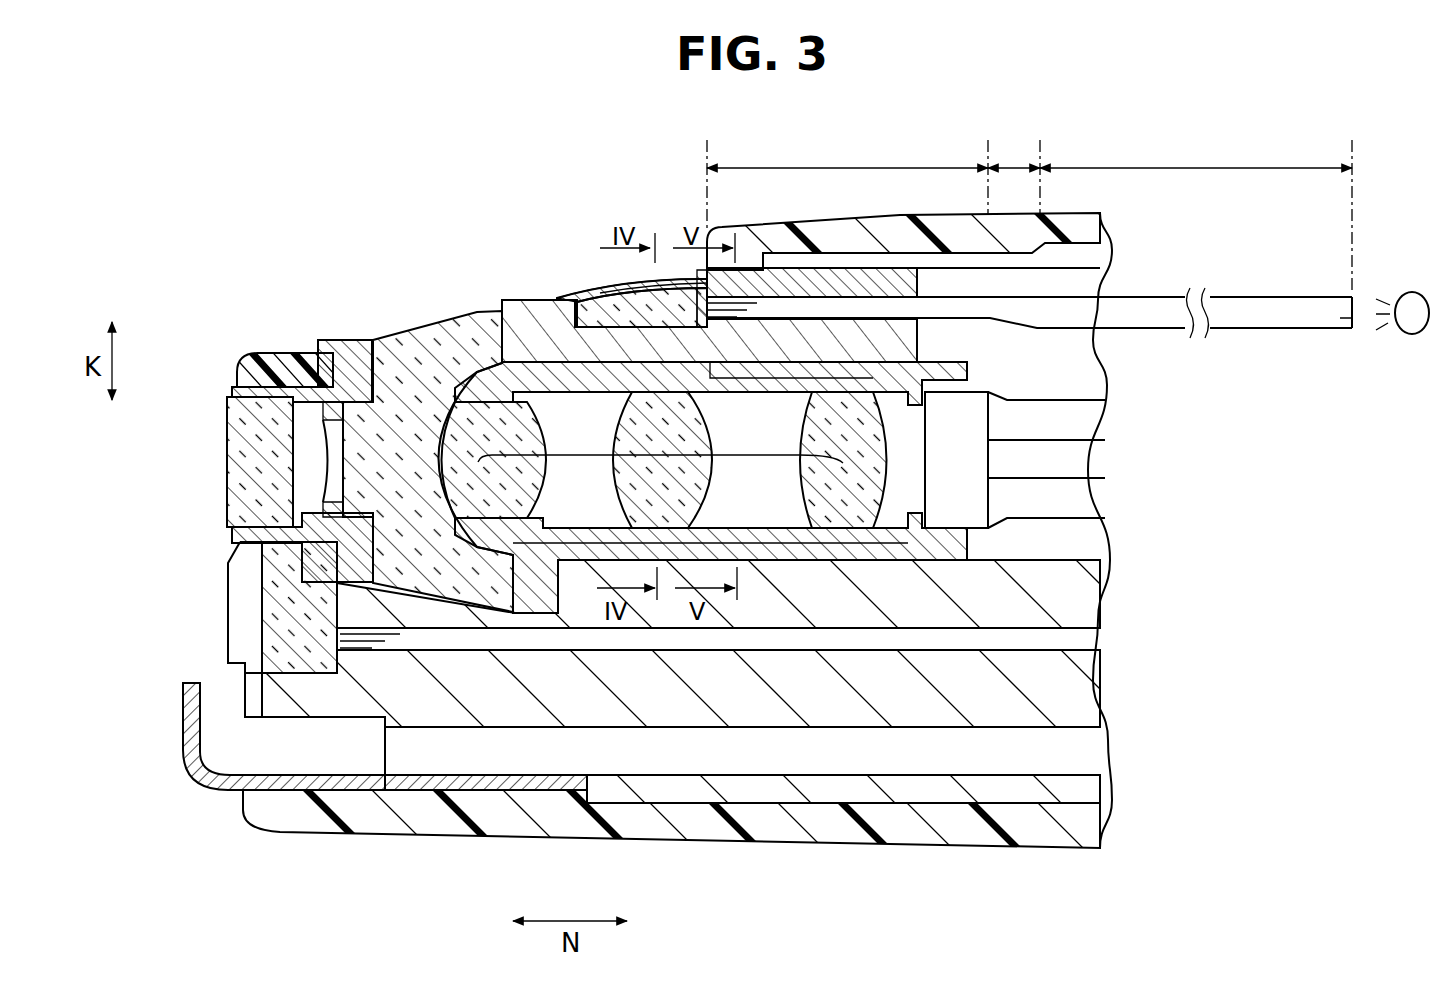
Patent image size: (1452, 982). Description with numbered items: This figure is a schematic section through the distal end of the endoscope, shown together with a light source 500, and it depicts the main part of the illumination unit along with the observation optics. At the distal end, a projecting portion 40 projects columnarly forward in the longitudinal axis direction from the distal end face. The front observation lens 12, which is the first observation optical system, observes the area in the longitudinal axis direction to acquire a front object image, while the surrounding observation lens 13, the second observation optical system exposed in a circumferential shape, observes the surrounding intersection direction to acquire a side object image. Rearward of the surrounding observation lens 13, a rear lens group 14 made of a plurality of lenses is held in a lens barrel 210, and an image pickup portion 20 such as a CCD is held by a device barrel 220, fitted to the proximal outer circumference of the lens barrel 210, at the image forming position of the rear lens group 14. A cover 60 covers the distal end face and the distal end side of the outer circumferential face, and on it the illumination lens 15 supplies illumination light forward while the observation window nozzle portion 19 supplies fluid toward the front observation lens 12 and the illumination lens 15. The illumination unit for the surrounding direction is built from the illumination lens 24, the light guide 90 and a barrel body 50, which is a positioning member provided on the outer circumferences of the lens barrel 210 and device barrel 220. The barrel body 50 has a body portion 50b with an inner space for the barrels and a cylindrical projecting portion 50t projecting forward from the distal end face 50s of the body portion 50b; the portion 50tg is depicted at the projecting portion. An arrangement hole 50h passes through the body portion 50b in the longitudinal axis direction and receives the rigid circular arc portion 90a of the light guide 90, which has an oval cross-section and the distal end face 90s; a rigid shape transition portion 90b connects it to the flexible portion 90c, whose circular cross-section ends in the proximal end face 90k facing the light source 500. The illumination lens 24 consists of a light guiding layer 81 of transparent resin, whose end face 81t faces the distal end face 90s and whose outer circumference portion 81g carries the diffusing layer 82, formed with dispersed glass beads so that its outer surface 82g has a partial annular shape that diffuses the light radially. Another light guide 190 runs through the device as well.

The front observation lens 12 is at (247, 460).
The surrounding observation lens 13 is at (412, 357).
The rear lens group 14 is at (660, 450).
The illumination lens 15 is at (280, 607).
The observation window nozzle portion 19 is at (213, 792).
The image pickup portion 20 is at (965, 458).
The illumination lens 24 is at (523, 230).
The projecting portion 40 is at (183, 856).
The barrel body 50 is at (783, 333).
The body portion 50b is at (862, 340).
The arrangement hole 50h is at (855, 300).
The distal end face 50s is at (735, 273).
The cylindrical projecting portion 50t is at (648, 330).
The barrel top groove 50tg is at (585, 382).
The cover 60 is at (940, 840).
The light guiding layer 81 is at (600, 315).
The outer circumference portion 81g is at (633, 290).
The end face 81t is at (700, 303).
The diffusing layer 82 is at (640, 283).
The outer surface 82g is at (577, 283).
The light guide 90 is at (1010, 307).
The circular arc portion 90a is at (847, 183).
The shape transition portion 90b is at (1014, 176).
The flexible portion 90c is at (1196, 213).
The proximal end face 90k is at (1347, 325).
The distal end face 90s is at (575, 190).
The light guide 190 is at (1070, 642).
The lens barrel 210 is at (573, 560).
The device barrel 220 is at (940, 362).
The light source 500 is at (1418, 332).